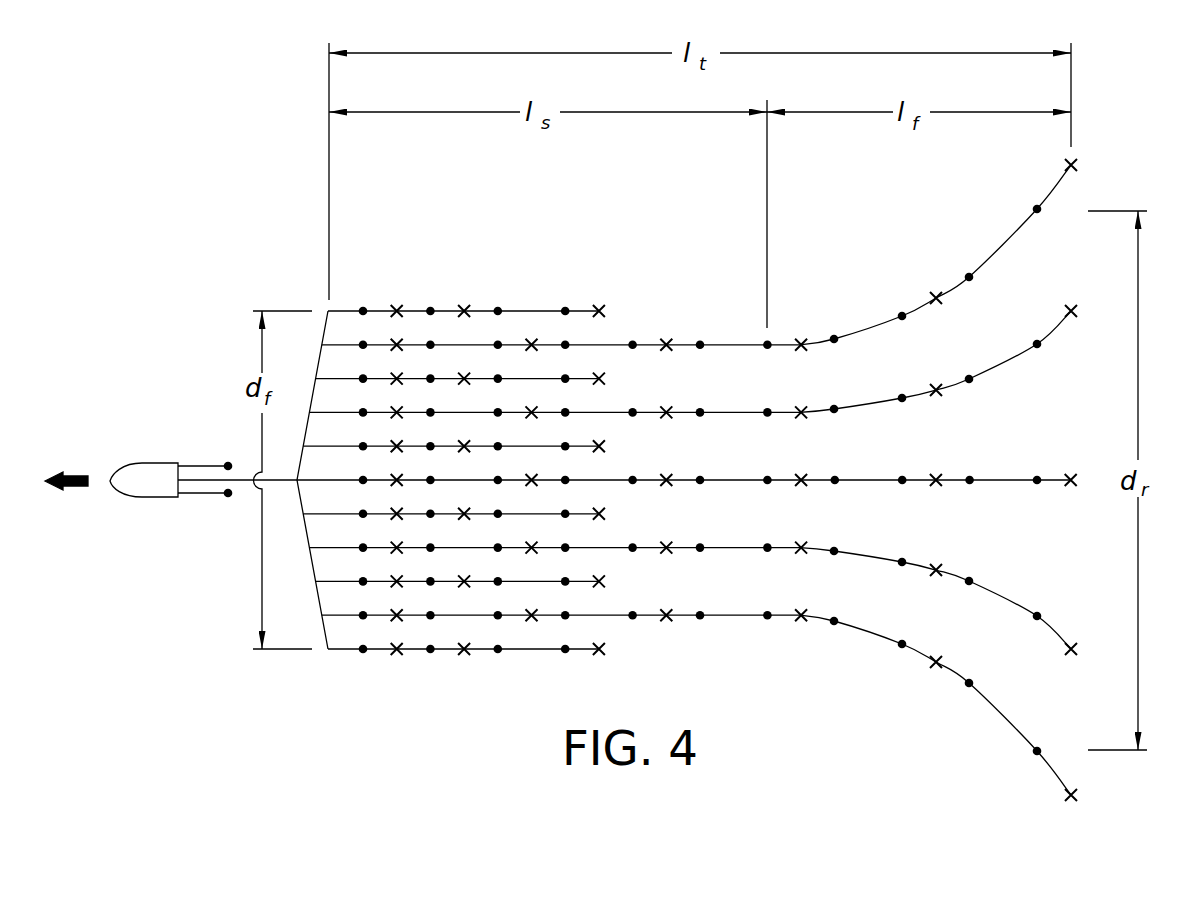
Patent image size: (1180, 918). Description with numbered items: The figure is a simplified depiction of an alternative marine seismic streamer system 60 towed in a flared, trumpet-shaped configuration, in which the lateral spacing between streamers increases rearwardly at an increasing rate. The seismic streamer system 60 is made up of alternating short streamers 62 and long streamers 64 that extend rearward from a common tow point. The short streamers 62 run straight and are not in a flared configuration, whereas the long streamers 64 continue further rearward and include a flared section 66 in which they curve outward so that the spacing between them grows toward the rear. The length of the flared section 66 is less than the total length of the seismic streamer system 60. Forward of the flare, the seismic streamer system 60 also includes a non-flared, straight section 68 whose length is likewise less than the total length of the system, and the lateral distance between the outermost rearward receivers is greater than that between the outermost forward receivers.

The seismic streamer system 60 is at (472, 695).
The short streamers 62 is at (445, 375).
The long streamers 64 is at (647, 410).
The flared section 66 is at (918, 230).
The non-flared/straight section 68 is at (617, 228).